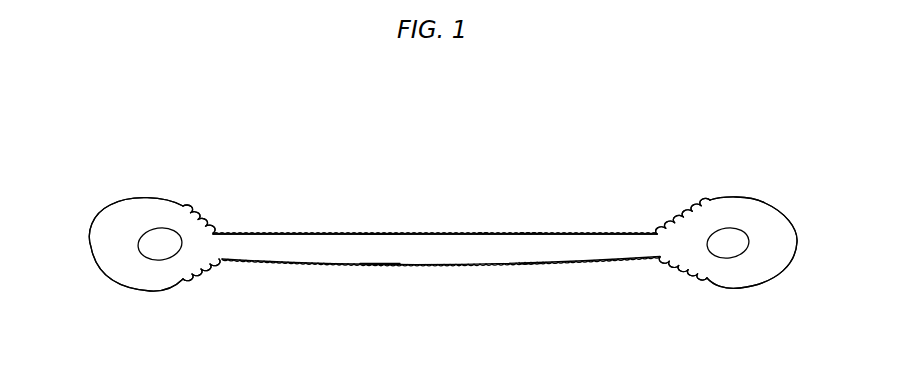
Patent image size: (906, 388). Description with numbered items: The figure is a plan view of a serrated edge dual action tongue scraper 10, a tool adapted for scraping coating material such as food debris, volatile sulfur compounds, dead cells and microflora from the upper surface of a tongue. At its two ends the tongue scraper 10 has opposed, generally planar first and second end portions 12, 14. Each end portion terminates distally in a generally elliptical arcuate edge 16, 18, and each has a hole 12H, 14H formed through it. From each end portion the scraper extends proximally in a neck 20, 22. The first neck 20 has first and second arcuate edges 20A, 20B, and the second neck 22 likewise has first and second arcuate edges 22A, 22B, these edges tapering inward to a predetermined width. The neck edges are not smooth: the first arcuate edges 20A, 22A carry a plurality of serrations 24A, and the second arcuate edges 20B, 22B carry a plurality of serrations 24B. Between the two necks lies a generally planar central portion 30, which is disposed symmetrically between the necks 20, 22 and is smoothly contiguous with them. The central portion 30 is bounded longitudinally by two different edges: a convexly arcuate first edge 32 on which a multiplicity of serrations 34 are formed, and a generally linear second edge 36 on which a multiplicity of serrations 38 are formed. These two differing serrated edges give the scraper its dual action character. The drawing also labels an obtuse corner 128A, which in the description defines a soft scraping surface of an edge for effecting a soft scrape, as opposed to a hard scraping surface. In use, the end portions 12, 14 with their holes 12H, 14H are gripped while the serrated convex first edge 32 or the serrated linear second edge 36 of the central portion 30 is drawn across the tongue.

The dual action tongue scraper 10 is at (360, 184).
The first end portion 12 is at (135, 197).
The hole 12H is at (157, 246).
The second end portion 14 is at (760, 196).
The hole 14H is at (727, 243).
The elliptical arcuate edge 16 is at (102, 222).
The elliptical arcuate edge 18 is at (795, 228).
The neck 20 is at (197, 216).
The first arcuate edge 20A is at (225, 230).
The second arcuate edge 20B is at (196, 272).
The neck 22 is at (659, 226).
The first arcuate edge 22A is at (684, 218).
The second arcuate edge 22B is at (683, 268).
The serrations 24A is at (211, 221).
The serrations 24B is at (207, 271).
The obtuse corner 128A is at (380, 232).
The central portion 30 is at (433, 229).
The convexly arcuate first edge 32 is at (430, 266).
The serrations 34 is at (543, 263).
The linear second edge 36 is at (483, 233).
The serrations 38 is at (543, 233).